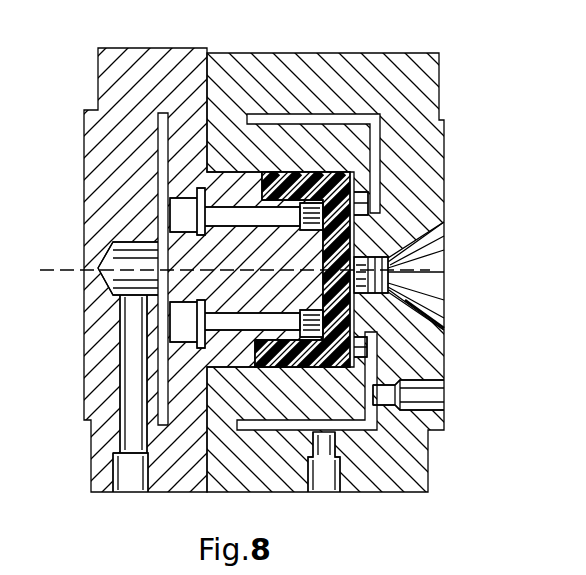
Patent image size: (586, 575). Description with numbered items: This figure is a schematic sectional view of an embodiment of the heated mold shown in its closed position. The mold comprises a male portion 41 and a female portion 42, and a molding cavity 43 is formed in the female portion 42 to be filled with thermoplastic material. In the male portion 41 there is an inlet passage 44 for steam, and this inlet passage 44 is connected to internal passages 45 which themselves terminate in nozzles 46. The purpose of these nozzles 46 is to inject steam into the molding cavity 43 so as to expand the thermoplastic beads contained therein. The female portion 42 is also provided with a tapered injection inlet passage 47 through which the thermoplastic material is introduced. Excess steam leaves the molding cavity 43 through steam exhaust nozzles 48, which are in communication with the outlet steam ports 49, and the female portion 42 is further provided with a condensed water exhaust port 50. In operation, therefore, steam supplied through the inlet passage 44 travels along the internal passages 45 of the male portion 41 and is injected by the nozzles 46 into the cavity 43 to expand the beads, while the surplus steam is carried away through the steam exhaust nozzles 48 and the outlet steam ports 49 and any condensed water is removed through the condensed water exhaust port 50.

The male portion 41 is at (113, 79).
The female portion 42 is at (437, 72).
The molding cavity 43 is at (273, 178).
The inlet passage 44 is at (127, 418).
The internal passages 45 is at (178, 213).
The nozzles 46 is at (358, 223).
The tapered injection inlet passage 47 is at (417, 268).
The steam exhaust nozzles 48 is at (367, 345).
The outlet steam ports 49 is at (427, 398).
The condensed water exhaust port 50 is at (326, 493).